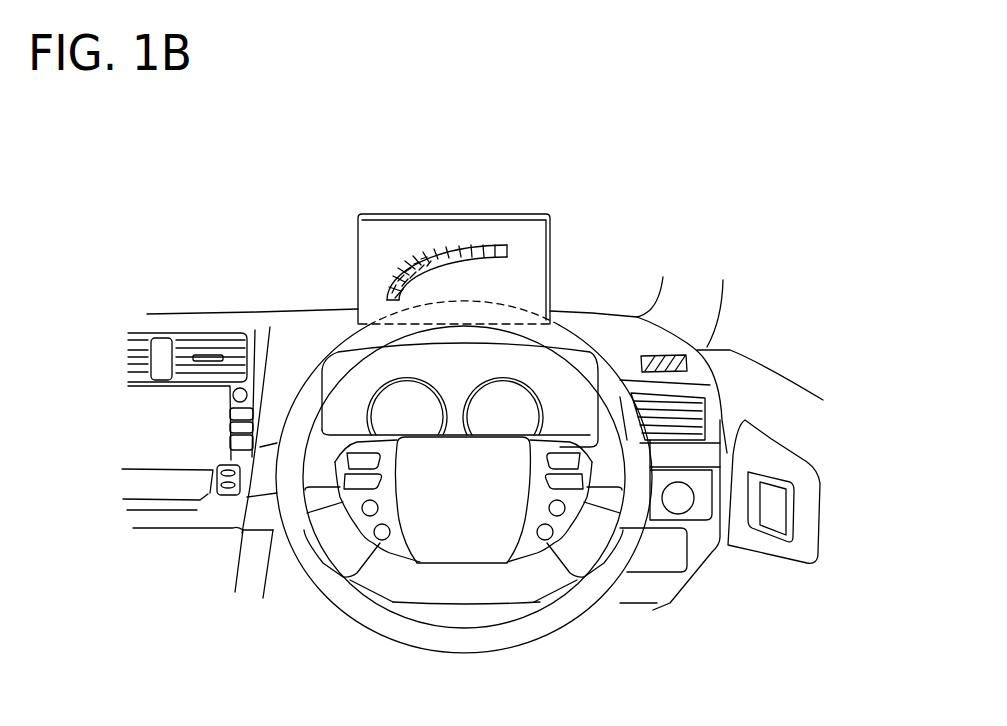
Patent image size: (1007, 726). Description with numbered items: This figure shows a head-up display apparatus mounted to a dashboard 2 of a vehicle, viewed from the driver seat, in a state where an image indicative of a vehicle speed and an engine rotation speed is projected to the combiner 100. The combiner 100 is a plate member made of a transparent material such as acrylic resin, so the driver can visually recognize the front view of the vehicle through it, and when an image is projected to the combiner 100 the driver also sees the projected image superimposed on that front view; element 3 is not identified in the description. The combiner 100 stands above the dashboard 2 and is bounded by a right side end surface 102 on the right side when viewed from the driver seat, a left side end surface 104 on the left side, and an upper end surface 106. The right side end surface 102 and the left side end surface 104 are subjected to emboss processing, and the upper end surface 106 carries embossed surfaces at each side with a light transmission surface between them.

The dashboard 2 is at (322, 322).
The windshield 3 is at (128, 262).
The combiner 100 is at (553, 153).
The right side end surface 102 is at (557, 265).
The left side end surface 104 is at (355, 267).
The upper end surface 106 is at (458, 213).